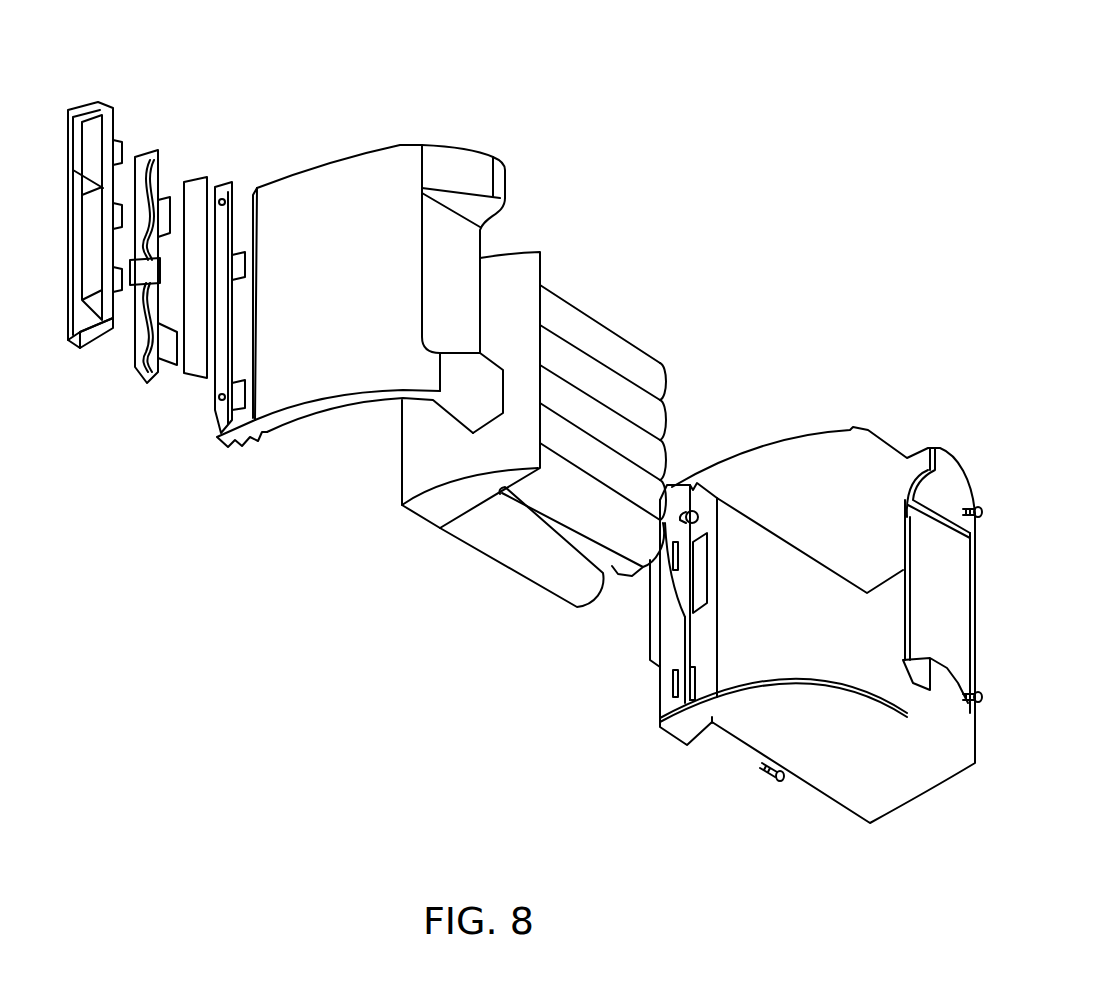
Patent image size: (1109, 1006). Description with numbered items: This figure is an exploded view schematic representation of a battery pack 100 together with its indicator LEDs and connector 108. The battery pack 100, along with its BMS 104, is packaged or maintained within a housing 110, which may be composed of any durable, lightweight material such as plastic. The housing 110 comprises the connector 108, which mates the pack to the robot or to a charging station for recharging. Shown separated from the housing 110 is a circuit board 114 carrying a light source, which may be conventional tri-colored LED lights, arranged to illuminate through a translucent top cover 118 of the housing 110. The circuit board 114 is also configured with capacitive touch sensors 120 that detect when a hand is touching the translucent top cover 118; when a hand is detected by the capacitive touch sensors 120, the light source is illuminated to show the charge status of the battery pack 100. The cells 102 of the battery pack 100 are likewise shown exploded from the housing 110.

The battery pack 100 is at (537, 390).
The coil 102 is at (567, 298).
The BMS 104 is at (517, 252).
The connector 108 is at (160, 200).
The housing 110 is at (834, 396).
The circuit board 114 is at (141, 150).
The translucent top cover 118 is at (360, 155).
The capacitive touch sensors 120 is at (130, 318).